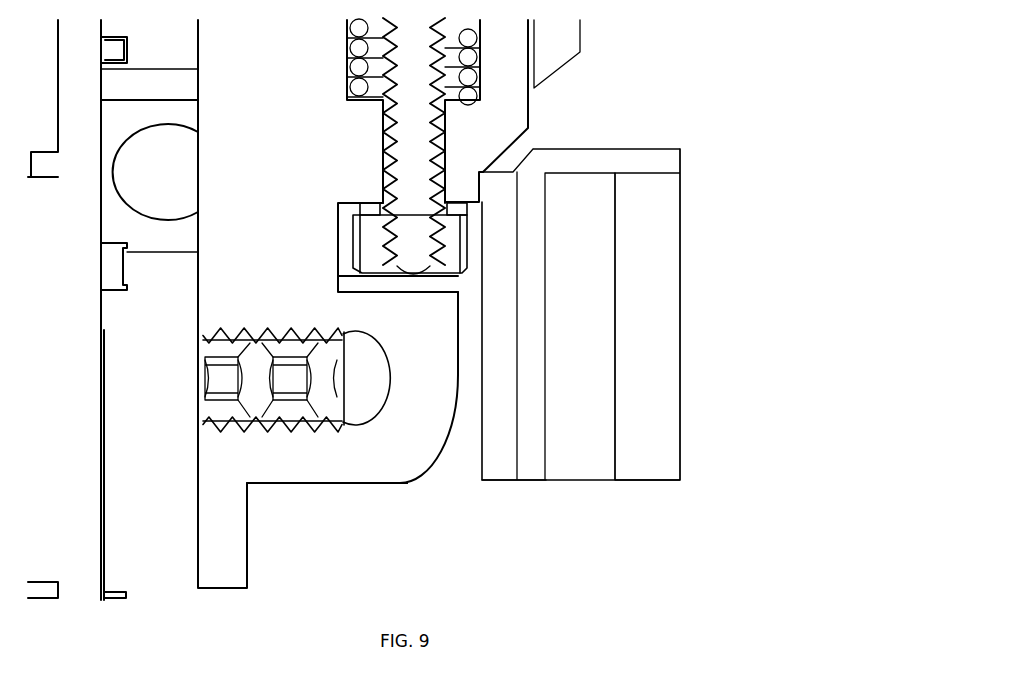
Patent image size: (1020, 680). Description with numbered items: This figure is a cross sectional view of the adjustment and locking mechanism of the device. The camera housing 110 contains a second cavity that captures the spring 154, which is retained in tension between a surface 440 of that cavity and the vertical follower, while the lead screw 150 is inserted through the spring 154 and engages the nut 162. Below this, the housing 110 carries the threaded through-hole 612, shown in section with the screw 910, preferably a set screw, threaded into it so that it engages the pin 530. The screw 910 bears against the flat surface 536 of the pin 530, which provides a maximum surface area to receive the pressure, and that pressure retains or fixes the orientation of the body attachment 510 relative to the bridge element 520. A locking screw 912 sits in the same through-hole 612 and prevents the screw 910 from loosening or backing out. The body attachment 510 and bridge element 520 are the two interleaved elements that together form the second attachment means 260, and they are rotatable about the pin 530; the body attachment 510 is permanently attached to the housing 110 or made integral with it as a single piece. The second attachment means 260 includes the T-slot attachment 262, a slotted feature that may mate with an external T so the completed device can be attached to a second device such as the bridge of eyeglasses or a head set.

The camera housing 110 is at (200, 537).
The spring 154 is at (468, 62).
The surface of second cavity 440 is at (468, 106).
The lead screw 150 is at (422, 228).
The nut 162 is at (463, 248).
The through-hole 612 is at (298, 423).
The screw 910 is at (287, 357).
The locking screw 912 is at (227, 348).
The pin 530 is at (383, 408).
The flat surface 536 is at (345, 425).
The body attachment 510 is at (320, 470).
The bridge element 520 is at (415, 475).
The second attachment means 260 is at (605, 483).
The T-slot attachment 262 is at (675, 453).